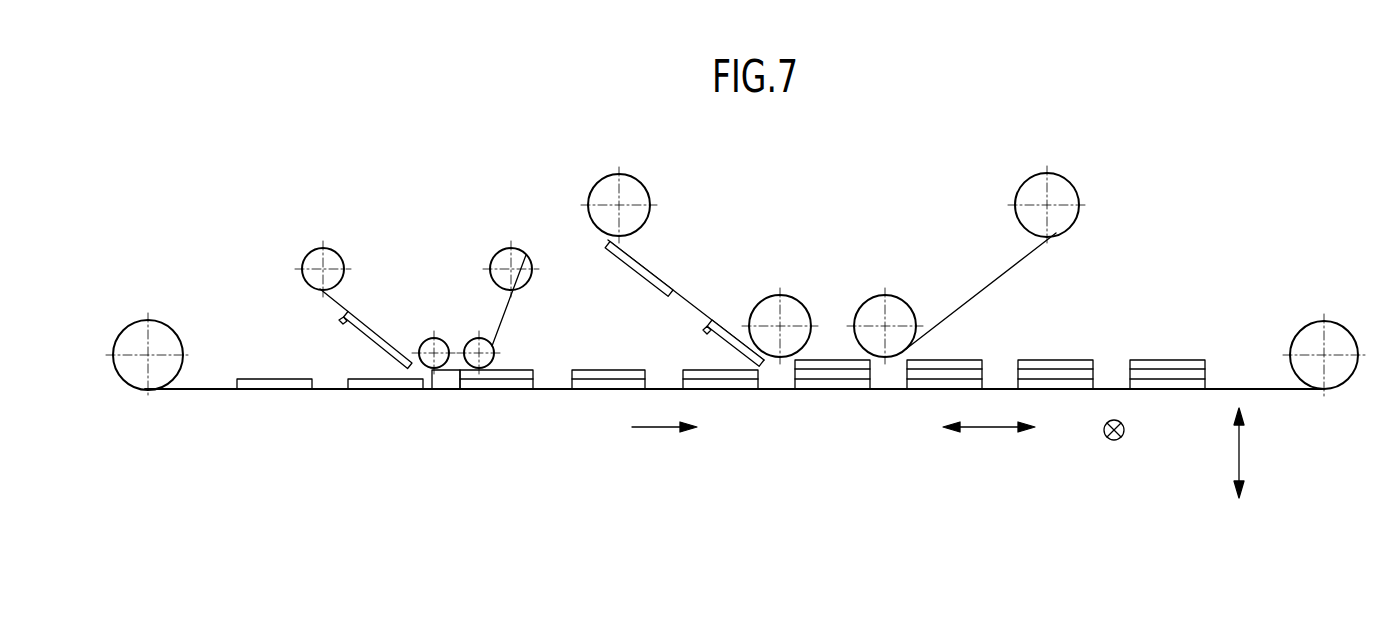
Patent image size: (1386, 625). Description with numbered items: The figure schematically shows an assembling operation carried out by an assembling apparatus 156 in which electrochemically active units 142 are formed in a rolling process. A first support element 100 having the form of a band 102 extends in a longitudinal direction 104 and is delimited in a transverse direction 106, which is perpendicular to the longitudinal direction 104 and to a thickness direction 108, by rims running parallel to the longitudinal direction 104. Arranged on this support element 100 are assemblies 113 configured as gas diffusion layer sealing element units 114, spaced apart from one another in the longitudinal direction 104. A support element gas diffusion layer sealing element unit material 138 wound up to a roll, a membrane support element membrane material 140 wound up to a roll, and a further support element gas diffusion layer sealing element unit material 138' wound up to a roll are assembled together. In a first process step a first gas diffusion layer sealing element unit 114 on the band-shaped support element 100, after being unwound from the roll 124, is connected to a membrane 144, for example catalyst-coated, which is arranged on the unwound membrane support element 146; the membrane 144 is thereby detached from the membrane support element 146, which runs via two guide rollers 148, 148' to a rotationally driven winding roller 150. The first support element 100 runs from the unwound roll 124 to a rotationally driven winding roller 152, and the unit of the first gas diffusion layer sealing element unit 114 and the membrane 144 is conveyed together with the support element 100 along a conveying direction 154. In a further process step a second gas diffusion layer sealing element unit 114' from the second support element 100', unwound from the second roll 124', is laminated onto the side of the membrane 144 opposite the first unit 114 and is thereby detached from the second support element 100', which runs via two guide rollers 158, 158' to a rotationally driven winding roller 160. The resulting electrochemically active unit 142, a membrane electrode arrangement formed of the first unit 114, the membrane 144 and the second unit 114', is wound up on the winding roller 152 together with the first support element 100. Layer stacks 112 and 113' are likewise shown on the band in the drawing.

The support element 100 is at (733, 431).
The second support element 100' is at (843, 285).
The band 102 is at (323, 390).
The longitudinal direction 104 is at (987, 428).
The transverse direction 106 is at (1124, 437).
The thickness direction 108 is at (1239, 455).
The layer stack 112 is at (558, 390).
The assembly 113 is at (350, 381).
The second intermediate layer 113' is at (749, 297).
The gas diffusion layer sealing element unit 114 is at (402, 428).
The second gas diffusion layer sealing element unit 114' is at (772, 296).
The roll 124 is at (145, 316).
The second roll 124' is at (636, 174).
The support element gas diffusion layer sealing element unit material 138 is at (152, 316).
The further support element gas diffusion layer sealing element unit material 138' is at (618, 174).
The membrane support element membrane material 140 is at (311, 259).
The electrochemically active unit 142 is at (1175, 348).
The membrane 144 is at (345, 322).
The membrane support element 146 is at (343, 303).
The guide roller 148 is at (432, 291).
The guide roller 148' is at (479, 291).
The winding roller 150 is at (520, 260).
The winding roller 152 is at (1335, 337).
The conveying direction 154 is at (652, 428).
The assembling apparatus 156 is at (1096, 173).
The guide roller 158 is at (780, 285).
The guide roller 158' is at (898, 284).
The winding roller 160 is at (1057, 193).